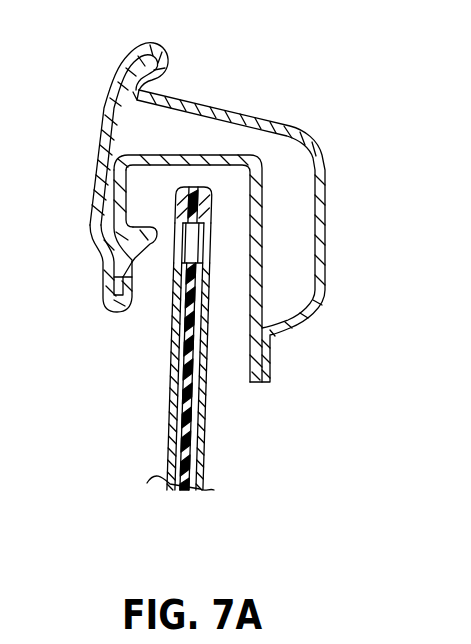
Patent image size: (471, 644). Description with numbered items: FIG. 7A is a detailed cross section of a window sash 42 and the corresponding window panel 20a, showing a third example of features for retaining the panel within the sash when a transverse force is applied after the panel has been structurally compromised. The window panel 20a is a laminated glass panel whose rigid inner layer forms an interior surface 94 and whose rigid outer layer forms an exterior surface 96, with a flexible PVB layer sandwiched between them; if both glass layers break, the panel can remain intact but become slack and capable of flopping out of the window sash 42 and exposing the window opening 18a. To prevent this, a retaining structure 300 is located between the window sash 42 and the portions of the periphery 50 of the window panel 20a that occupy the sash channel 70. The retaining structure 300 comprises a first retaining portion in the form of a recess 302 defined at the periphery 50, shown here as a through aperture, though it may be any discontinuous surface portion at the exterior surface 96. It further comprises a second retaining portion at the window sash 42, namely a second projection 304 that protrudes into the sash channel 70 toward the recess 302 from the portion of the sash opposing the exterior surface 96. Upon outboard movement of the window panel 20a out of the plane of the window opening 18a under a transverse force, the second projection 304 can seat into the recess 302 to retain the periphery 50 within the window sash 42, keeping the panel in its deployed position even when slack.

The window sash 42 is at (140, 50).
The periphery of the window panel 50 is at (208, 318).
The sash channel 70 is at (150, 191).
The retaining structure 300 is at (198, 188).
The recess 302 is at (205, 240).
The second projection 304 is at (138, 232).
The window opening 18a is at (196, 416).
The interior surface 94 is at (201, 443).
The exterior surface 96 is at (166, 447).
The window panel 20a is at (201, 477).